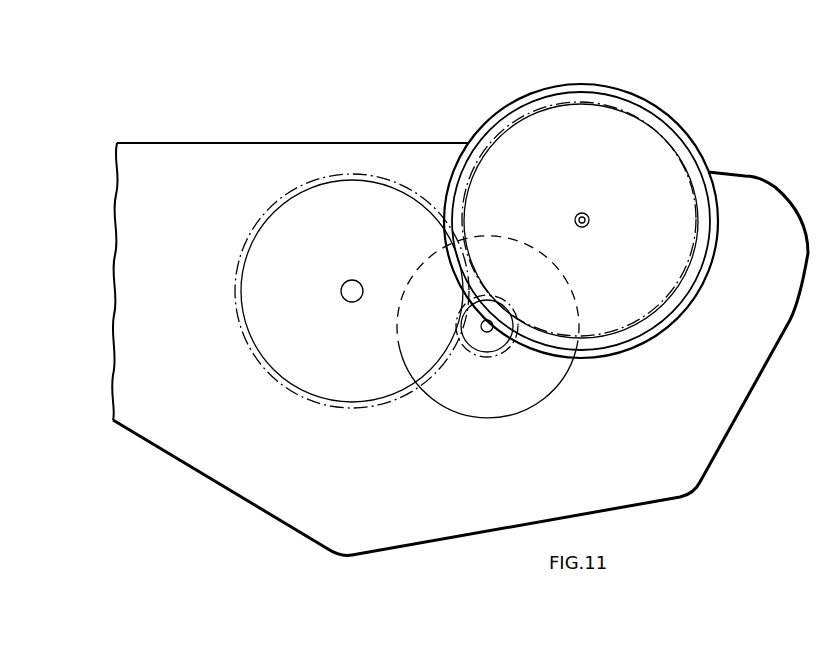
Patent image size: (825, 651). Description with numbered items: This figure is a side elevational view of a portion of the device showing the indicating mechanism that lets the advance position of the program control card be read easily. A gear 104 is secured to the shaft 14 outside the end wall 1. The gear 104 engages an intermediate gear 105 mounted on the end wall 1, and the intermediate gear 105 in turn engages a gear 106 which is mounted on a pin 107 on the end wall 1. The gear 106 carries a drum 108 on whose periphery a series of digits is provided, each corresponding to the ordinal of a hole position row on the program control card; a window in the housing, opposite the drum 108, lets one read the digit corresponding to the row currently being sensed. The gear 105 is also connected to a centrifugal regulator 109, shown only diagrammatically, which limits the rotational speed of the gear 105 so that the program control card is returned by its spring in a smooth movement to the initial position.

The end wall 1 is at (276, 150).
The shaft 14 is at (345, 293).
The gear 104 is at (366, 176).
The intermediate gear 105 is at (498, 357).
The gear 106 is at (594, 106).
The pin 107 is at (590, 222).
The drum 108 is at (661, 113).
The centrifugal regulator 109 is at (549, 386).